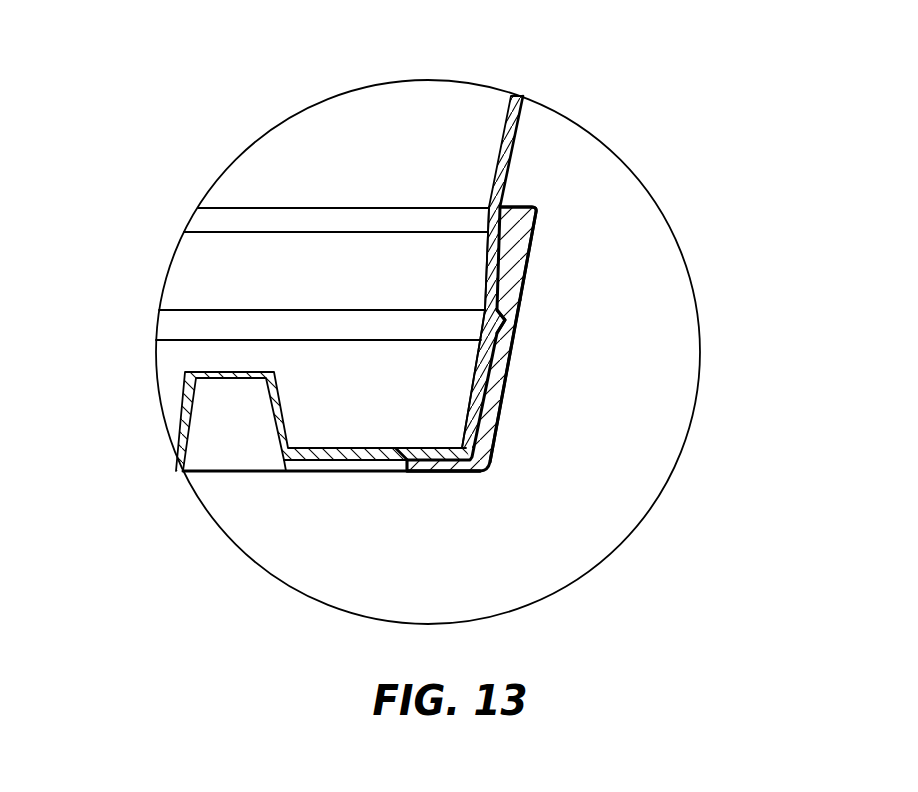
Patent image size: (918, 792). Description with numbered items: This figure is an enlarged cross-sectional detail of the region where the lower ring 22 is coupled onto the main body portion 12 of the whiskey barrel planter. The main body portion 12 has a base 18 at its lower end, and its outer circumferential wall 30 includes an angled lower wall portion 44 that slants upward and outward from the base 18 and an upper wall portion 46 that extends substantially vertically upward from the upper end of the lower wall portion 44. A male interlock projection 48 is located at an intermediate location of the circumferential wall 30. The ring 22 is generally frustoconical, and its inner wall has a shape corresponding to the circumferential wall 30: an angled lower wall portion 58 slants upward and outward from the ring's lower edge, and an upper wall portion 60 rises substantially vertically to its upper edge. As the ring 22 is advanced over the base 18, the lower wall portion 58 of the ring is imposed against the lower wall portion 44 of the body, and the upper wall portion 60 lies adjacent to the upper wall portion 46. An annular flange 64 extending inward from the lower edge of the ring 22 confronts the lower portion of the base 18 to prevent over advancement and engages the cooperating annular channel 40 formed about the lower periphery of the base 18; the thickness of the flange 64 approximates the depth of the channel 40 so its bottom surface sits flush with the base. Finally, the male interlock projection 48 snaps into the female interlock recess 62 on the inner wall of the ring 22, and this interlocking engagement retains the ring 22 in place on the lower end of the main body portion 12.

The main body portion 12 is at (511, 158).
The base 18 is at (307, 474).
The lower ring 22 is at (496, 438).
The circumferential wall 30 is at (363, 473).
The annular channel 40 is at (420, 466).
The lower wall portion 44 is at (483, 398).
The upper wall portion 46 is at (505, 262).
The male interlock projection 48 is at (500, 330).
The lower wall portion 58 is at (475, 402).
The upper wall portion 60 is at (492, 248).
The female interlock recess 62 is at (497, 323).
The annular flange 64 is at (452, 473).